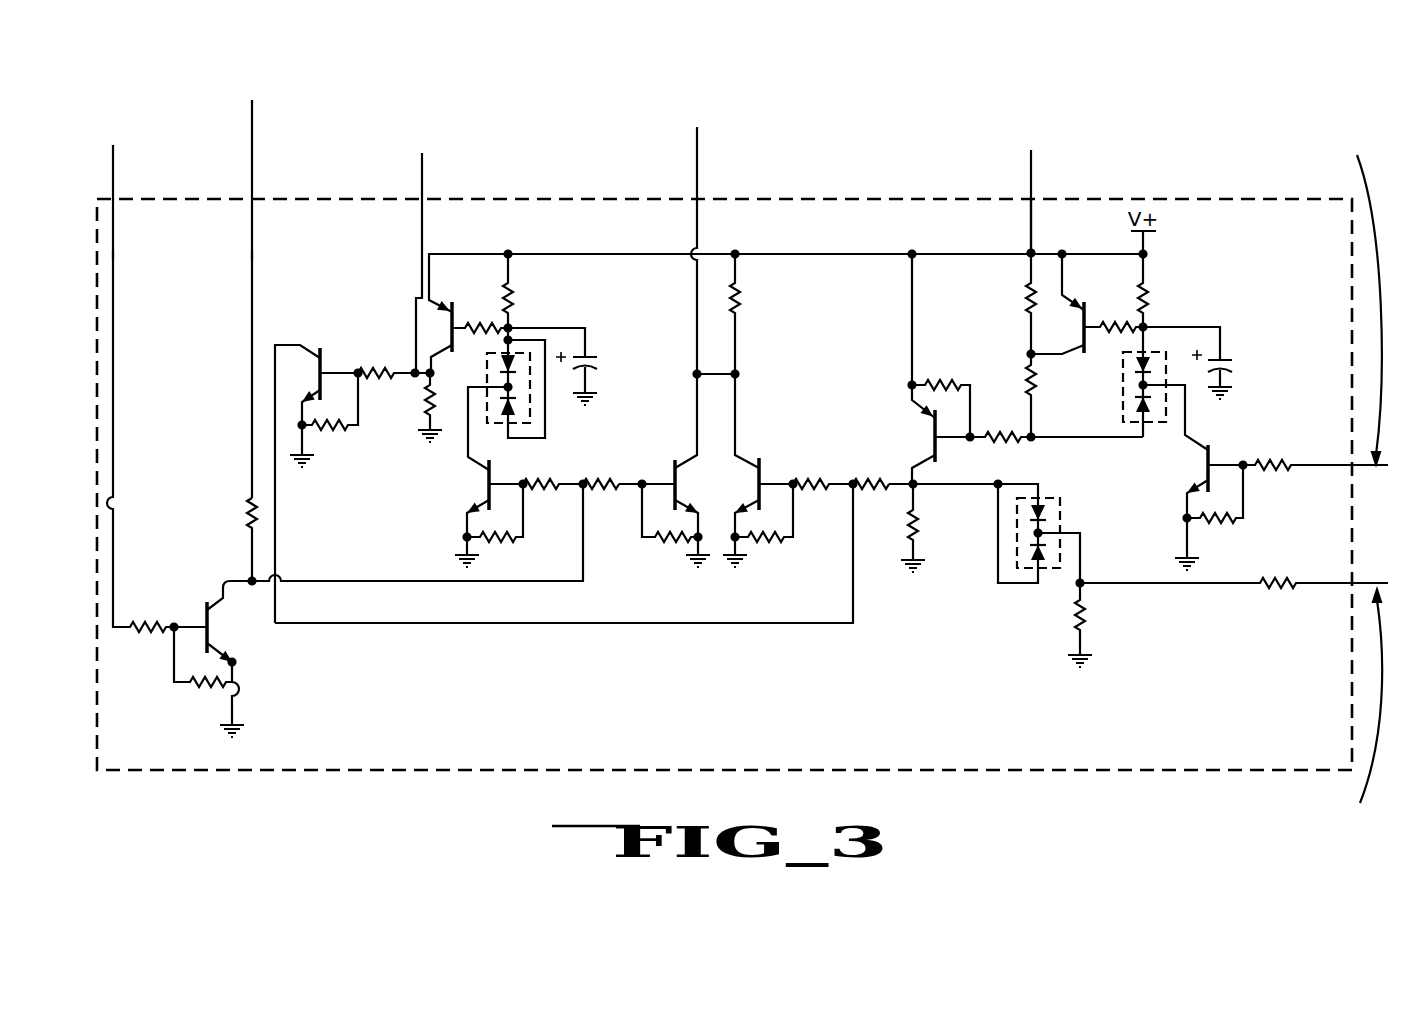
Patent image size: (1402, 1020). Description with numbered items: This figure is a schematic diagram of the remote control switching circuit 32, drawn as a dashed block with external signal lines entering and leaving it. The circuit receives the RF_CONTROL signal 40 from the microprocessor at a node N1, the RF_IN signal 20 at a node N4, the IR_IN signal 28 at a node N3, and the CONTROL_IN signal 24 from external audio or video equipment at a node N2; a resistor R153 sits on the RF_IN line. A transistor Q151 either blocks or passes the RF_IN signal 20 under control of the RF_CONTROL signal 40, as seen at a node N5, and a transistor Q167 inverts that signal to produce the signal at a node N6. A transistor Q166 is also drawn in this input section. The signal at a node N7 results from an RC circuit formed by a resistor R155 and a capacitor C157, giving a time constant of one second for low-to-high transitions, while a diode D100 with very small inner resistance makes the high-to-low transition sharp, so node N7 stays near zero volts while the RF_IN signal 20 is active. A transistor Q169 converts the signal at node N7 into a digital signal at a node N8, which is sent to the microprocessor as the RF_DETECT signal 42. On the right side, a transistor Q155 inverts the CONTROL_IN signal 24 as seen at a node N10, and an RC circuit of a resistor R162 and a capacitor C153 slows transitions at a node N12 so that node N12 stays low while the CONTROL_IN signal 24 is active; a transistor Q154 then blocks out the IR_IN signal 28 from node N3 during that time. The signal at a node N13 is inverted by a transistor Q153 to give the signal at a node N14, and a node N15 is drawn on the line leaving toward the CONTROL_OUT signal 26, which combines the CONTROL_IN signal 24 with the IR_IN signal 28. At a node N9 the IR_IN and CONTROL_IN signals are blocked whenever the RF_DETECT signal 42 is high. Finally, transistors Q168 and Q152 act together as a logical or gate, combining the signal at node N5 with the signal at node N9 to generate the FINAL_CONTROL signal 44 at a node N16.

The RF_IN signal 20 is at (252, 152).
The CONTROL_IN signal 24 is at (1315, 296).
The CONTROL_OUT signal 26 is at (1308, 725).
The IR_IN signal 28 is at (1031, 178).
The remote control switching circuit 32 is at (1297, 705).
The RF_CONTROL signal 40 is at (155, 184).
The RF_DETECT signal 42 is at (420, 238).
The FINAL_CONTROL signal 44 is at (699, 256).
The transistor Q151 is at (174, 657).
The transistor Q152 is at (788, 500).
The transistor Q153 is at (922, 369).
The transistor Q154 is at (1087, 318).
The transistor Q155 is at (1196, 507).
The transistor Q166 is at (345, 470).
The transistor Q167 is at (505, 513).
The transistor Q168 is at (675, 500).
The transistor Q169 is at (468, 313).
The resistor R153 is at (226, 539).
The resistor R155 is at (536, 291).
The resistor R162 is at (1172, 290).
The capacitor C153 is at (1243, 374).
The capacitor C157 is at (601, 368).
The diode D100 is at (533, 438).
The node N1 is at (113, 550).
The node N2 is at (1255, 464).
The node N3 is at (1031, 236).
The node N4 is at (252, 250).
The node N5 is at (291, 581).
The node N6 is at (466, 410).
The node N7 is at (508, 326).
The node N8 is at (414, 372).
The node N9 is at (831, 623).
The node N10 is at (1190, 432).
The node N12 is at (1143, 327).
The node N13 is at (1031, 333).
The node N14 is at (920, 468).
The node N15 is at (1298, 582).
The node N16 is at (697, 414).